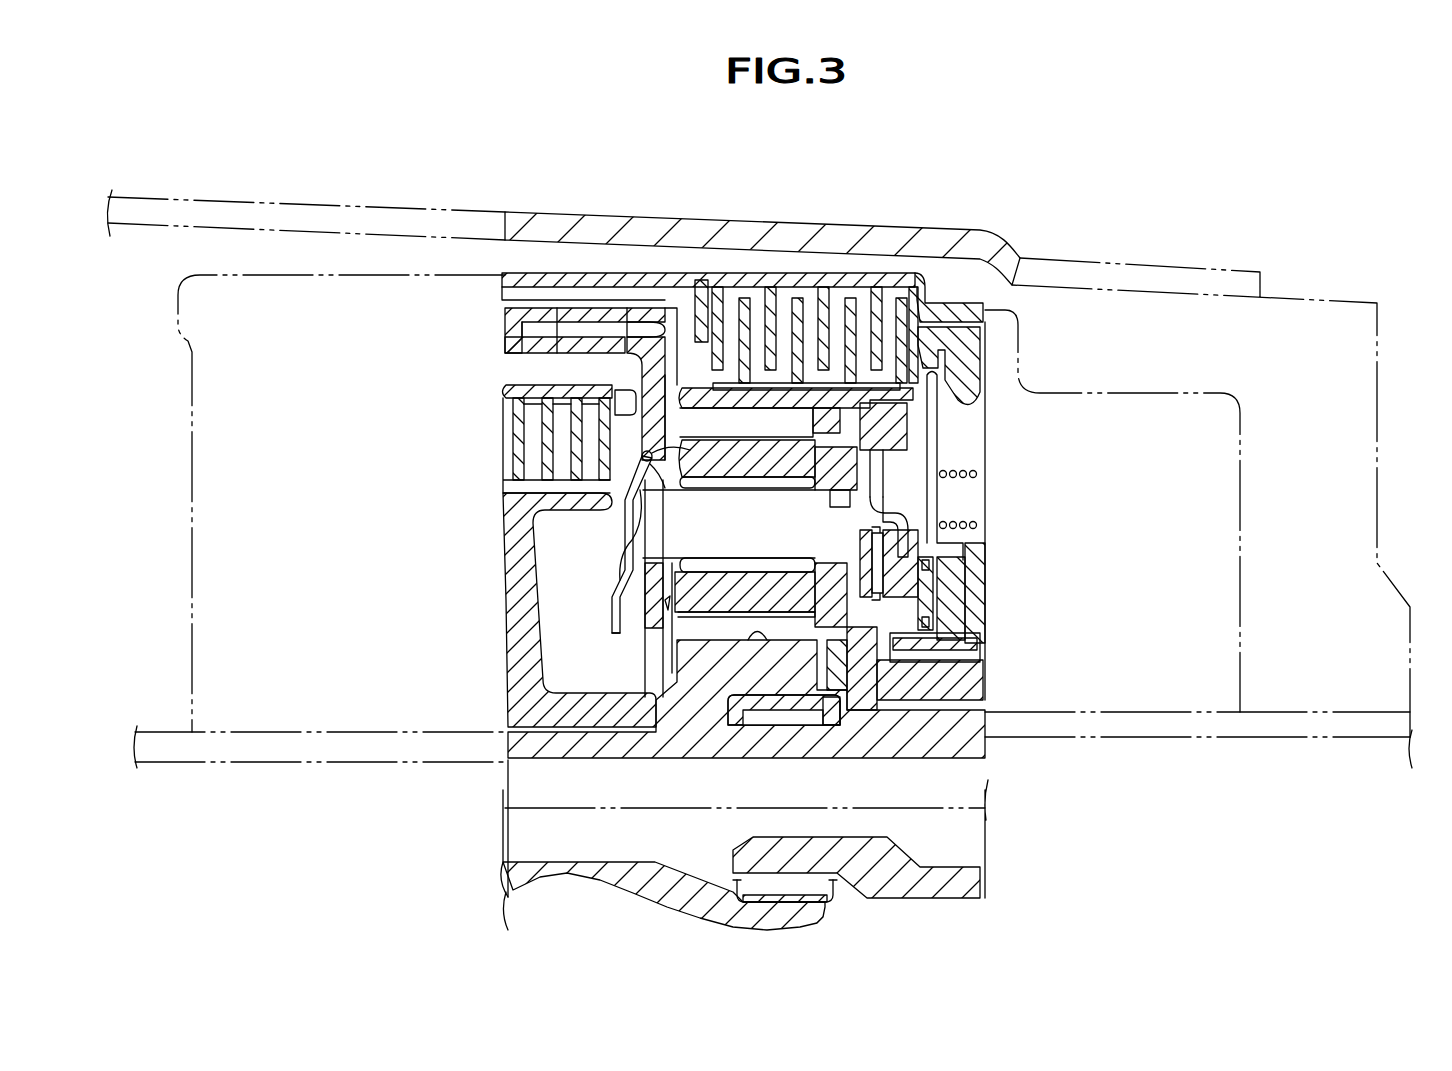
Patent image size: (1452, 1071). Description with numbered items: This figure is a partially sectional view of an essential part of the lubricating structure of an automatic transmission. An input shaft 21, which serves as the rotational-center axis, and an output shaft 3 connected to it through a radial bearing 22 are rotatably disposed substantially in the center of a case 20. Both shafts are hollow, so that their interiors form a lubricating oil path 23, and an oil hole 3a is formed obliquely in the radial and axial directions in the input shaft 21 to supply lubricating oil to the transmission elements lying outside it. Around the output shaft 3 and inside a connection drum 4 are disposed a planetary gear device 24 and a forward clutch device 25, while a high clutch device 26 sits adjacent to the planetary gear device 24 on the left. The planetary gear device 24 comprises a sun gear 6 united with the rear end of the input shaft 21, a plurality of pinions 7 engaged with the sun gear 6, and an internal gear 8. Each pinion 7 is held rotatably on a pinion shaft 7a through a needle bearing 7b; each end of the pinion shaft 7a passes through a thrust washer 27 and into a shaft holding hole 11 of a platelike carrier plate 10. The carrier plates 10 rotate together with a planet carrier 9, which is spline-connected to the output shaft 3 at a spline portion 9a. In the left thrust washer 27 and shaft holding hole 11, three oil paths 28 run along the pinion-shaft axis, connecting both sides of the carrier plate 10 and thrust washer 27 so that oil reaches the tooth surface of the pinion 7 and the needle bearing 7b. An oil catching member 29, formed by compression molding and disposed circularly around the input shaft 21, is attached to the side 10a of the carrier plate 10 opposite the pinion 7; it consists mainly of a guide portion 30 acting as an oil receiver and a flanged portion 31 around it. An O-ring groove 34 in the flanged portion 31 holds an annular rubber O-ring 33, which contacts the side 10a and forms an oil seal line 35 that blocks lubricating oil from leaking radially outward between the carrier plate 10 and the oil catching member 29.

The output shaft 3 is at (947, 730).
The oil hole 3a is at (693, 710).
The connection drum 4 is at (672, 273).
The sun gear 6 is at (773, 640).
The pinion 7 is at (907, 392).
The pinion shaft 7a is at (885, 522).
The needle bearing 7b is at (787, 483).
The internal gear 8 is at (842, 424).
The planet carrier 9 is at (882, 623).
The spline portion 9a is at (985, 756).
The carrier plate 10 is at (634, 416).
The side of carrier plate 10a is at (500, 448).
The shaft holding hole 11 is at (980, 474).
The case 20 is at (860, 236).
The input shaft 21 is at (597, 747).
The radial bearing 22 is at (840, 717).
The lubricating oil path 23 is at (830, 800).
The planetary gear device 24 is at (688, 378).
The forward clutch device 25 is at (935, 300).
The high clutch device 26 is at (583, 378).
The thrust washer 27 is at (925, 580).
The oil path 28 is at (637, 480).
The oil catching member 29 is at (605, 613).
The guide portion 30 is at (613, 627).
The flanged portion 31 is at (640, 463).
The O-ring 33 is at (652, 458).
The O-ring groove 34 is at (652, 453).
The oil seal line 35 is at (655, 460).